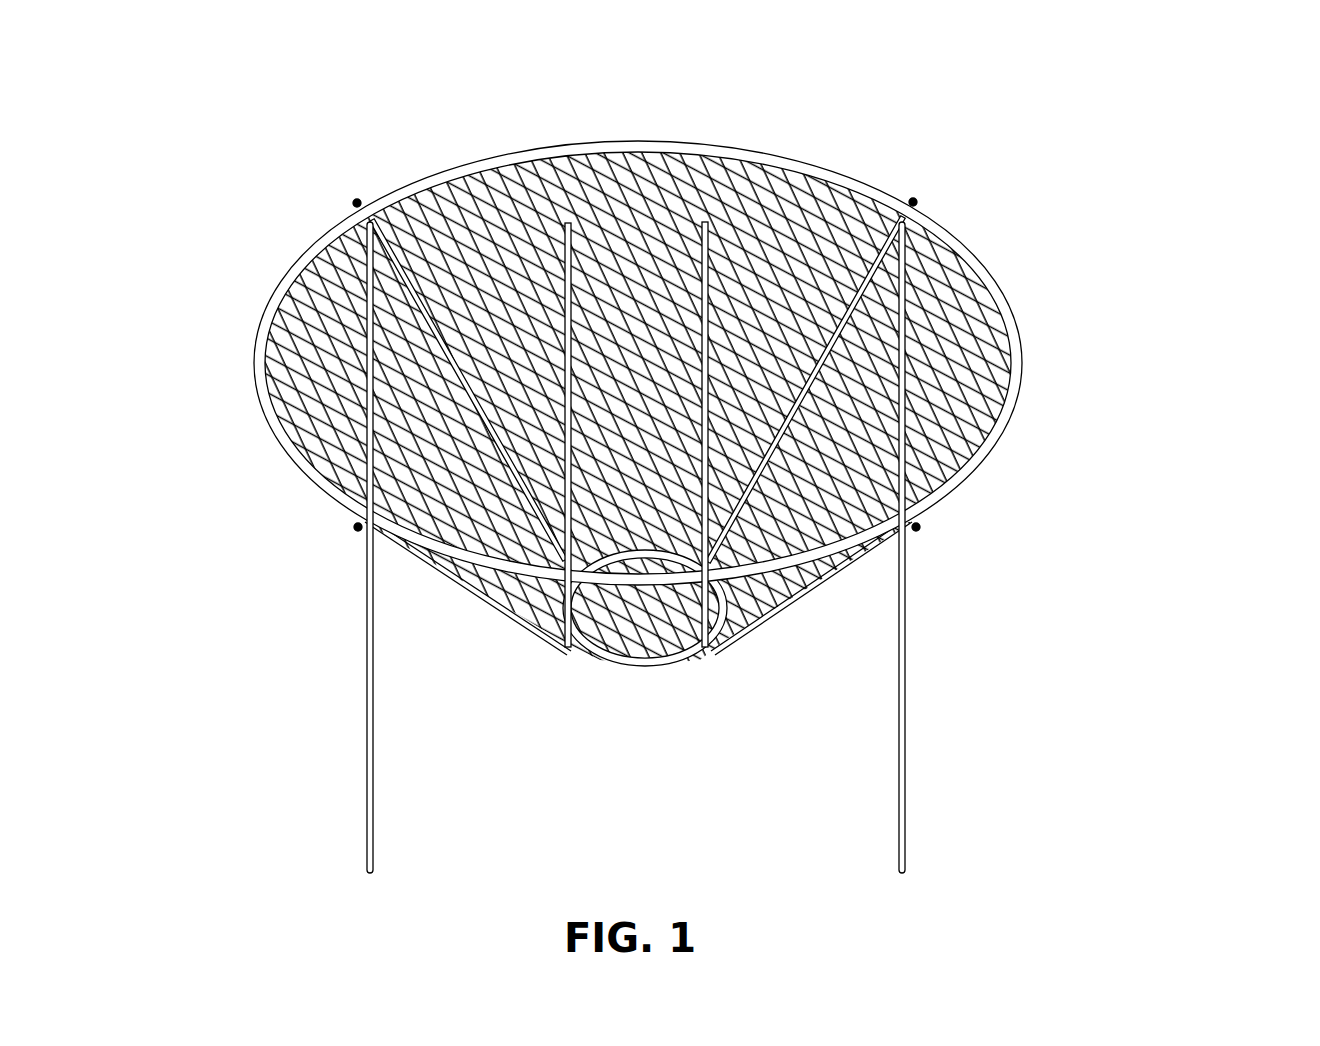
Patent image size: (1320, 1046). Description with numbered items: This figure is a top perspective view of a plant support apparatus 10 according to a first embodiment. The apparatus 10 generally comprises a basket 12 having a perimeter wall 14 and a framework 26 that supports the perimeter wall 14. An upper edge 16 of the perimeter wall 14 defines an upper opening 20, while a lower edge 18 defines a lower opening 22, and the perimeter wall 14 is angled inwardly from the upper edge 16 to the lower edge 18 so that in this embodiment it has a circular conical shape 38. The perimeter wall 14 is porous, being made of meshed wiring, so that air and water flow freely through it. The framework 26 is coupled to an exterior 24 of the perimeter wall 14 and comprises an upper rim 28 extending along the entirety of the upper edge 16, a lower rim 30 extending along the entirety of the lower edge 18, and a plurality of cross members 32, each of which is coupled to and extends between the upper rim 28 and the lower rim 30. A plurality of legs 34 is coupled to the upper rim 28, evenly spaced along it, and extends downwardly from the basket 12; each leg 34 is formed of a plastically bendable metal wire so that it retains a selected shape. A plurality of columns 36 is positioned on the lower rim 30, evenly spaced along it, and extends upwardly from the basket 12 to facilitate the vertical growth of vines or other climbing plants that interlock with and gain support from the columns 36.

The plant support apparatus 10 is at (1055, 183).
The basket 12 is at (1045, 372).
The perimeter wall 14 is at (973, 360).
The upper edge 16 is at (950, 250).
The lower edge 18 is at (633, 656).
The upper opening 20 is at (662, 175).
The lower opening 22 is at (600, 682).
The exterior 24 is at (755, 600).
The framework 26 is at (235, 392).
The upper rim 28 is at (333, 232).
The lower rim 30 is at (577, 657).
The cross member 32 is at (400, 263).
The leg 34 is at (378, 305).
The column 36 is at (513, 253).
The circular conical shape 38 is at (333, 430).